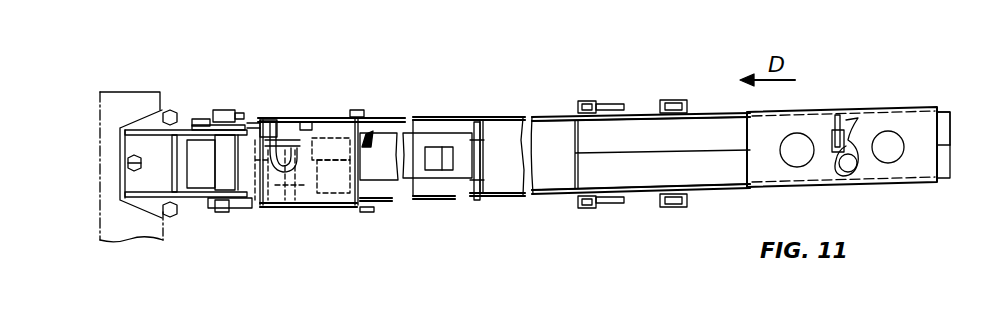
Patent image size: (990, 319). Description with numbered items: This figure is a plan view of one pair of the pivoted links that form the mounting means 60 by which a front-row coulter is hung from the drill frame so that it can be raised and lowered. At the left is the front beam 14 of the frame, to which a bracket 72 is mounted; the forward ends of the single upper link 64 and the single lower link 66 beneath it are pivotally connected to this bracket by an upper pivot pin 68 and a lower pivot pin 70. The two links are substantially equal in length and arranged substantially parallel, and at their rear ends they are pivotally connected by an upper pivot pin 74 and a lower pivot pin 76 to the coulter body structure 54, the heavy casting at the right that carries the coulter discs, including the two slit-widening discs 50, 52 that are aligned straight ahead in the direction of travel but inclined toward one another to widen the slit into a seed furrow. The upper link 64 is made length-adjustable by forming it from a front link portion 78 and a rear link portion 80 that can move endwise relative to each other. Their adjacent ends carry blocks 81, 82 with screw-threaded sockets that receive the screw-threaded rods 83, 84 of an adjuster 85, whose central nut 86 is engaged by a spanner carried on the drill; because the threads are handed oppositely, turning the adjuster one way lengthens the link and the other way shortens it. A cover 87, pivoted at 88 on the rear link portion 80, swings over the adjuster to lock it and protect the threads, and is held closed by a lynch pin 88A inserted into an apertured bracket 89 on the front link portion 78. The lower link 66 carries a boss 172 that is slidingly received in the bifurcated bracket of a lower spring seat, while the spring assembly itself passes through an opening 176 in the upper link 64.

The front beam 14 is at (135, 228).
The slit-widening disc 50 is at (947, 165).
The slit-widening disc 52 is at (947, 117).
The coulter body structure 54 is at (733, 183).
The mounting means 60 is at (413, 107).
The upper link 64 is at (560, 112).
The lower link 66 is at (440, 133).
The upper pivot pin 68 is at (223, 110).
The lower pivot pin 70 is at (200, 123).
The bracket 72 is at (182, 203).
The upper pivot pin 74 is at (613, 207).
The lower pivot pin 76 is at (587, 207).
The front link portion 78 is at (225, 217).
The rear link portion 80 is at (443, 197).
The block 81 is at (293, 207).
The block 82 is at (323, 207).
The screw-threaded rod 83 is at (260, 203).
The screw-threaded rod 84 is at (390, 187).
The adjuster 85 is at (387, 113).
The central nut 86 is at (312, 207).
The cover 87 is at (275, 115).
The pivot 88 is at (367, 108).
The lynch pin 88A is at (308, 128).
The apertured bracket 89 is at (250, 122).
The boss 172 is at (458, 158).
The opening 176 is at (480, 200).